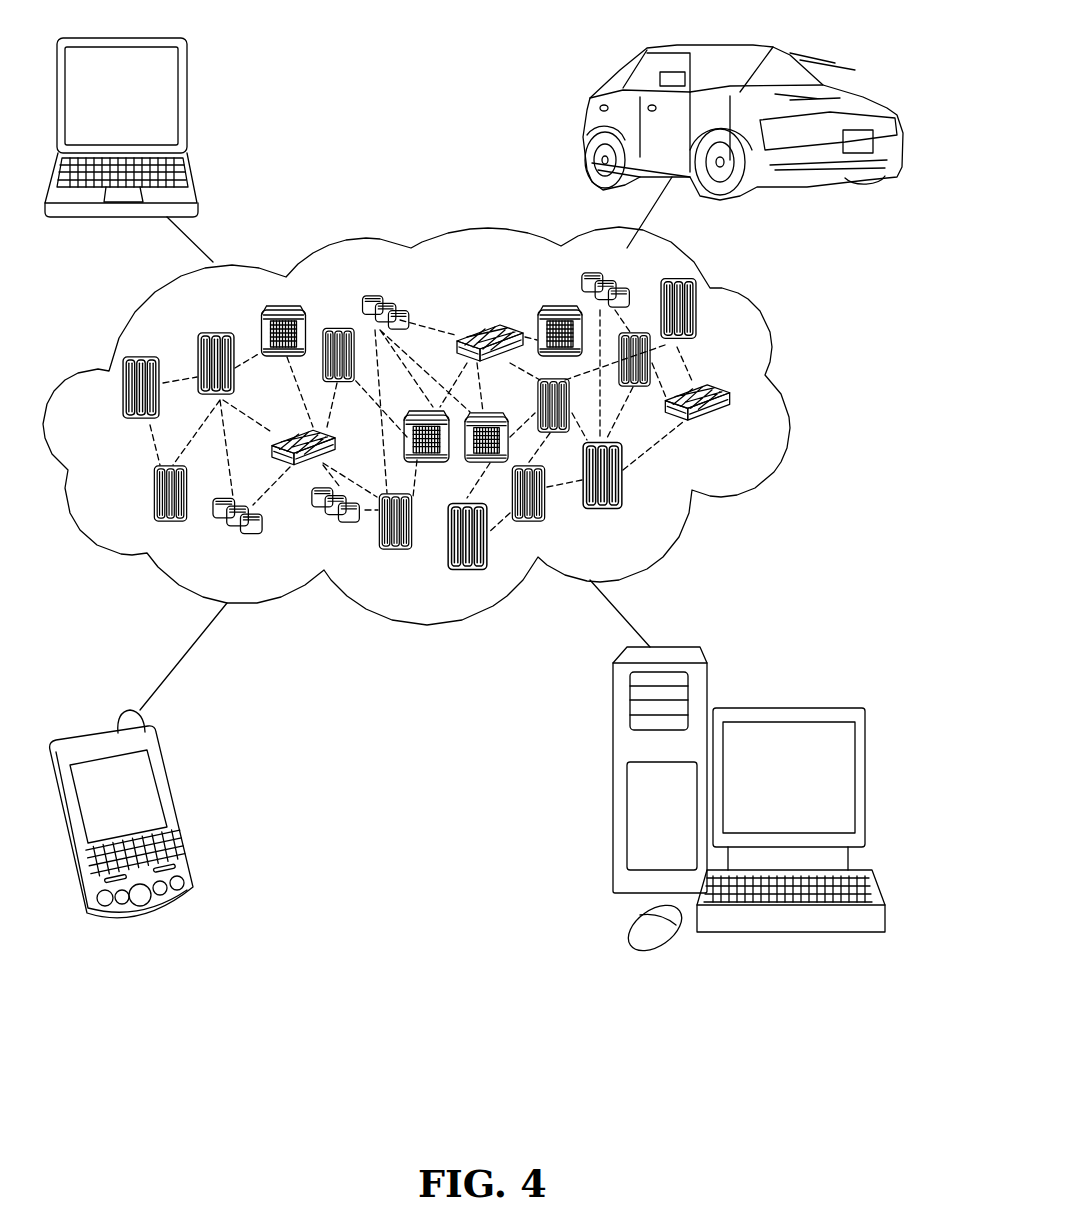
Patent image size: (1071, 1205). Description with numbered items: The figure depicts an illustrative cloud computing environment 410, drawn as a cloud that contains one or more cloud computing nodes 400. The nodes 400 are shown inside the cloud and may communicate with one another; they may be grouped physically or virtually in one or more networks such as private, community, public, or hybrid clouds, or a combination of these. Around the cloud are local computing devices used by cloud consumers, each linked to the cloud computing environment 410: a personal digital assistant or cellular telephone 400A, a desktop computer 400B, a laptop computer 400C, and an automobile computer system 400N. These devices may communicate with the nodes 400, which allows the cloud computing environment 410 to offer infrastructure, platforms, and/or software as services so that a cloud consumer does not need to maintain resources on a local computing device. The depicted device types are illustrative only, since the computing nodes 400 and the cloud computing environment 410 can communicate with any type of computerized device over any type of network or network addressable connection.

The cloud computing nodes 400 is at (450, 426).
The cloud computing environment 410 is at (785, 400).
The personal digital assistant or cellular telephone 400A is at (177, 810).
The desktop computer 400B is at (787, 708).
The laptop computer 400C is at (187, 110).
The automobile computer system 400N is at (588, 121).